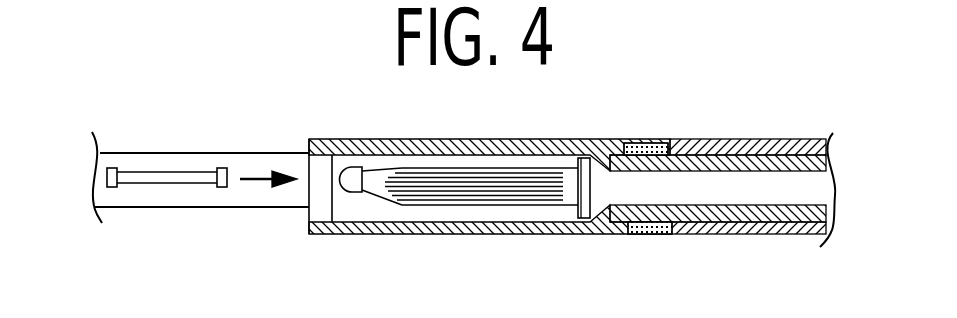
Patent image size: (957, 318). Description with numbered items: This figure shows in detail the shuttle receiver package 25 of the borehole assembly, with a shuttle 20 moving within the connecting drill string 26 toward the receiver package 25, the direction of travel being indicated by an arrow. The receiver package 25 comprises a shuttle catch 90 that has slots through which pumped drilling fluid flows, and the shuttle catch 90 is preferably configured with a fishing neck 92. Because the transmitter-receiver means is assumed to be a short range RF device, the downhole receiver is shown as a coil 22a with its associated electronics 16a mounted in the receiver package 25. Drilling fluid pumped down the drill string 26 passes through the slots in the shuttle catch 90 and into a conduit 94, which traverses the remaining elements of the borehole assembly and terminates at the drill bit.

The shuttle 20 is at (158, 172).
The drill string 26 is at (225, 153).
The shuttle receiver package 25 is at (383, 235).
The fishing neck 92 is at (353, 178).
The shuttle catch 90 is at (471, 207).
The coil 22a is at (632, 141).
The associated electronics 16a is at (702, 184).
The conduit 94 is at (747, 141).